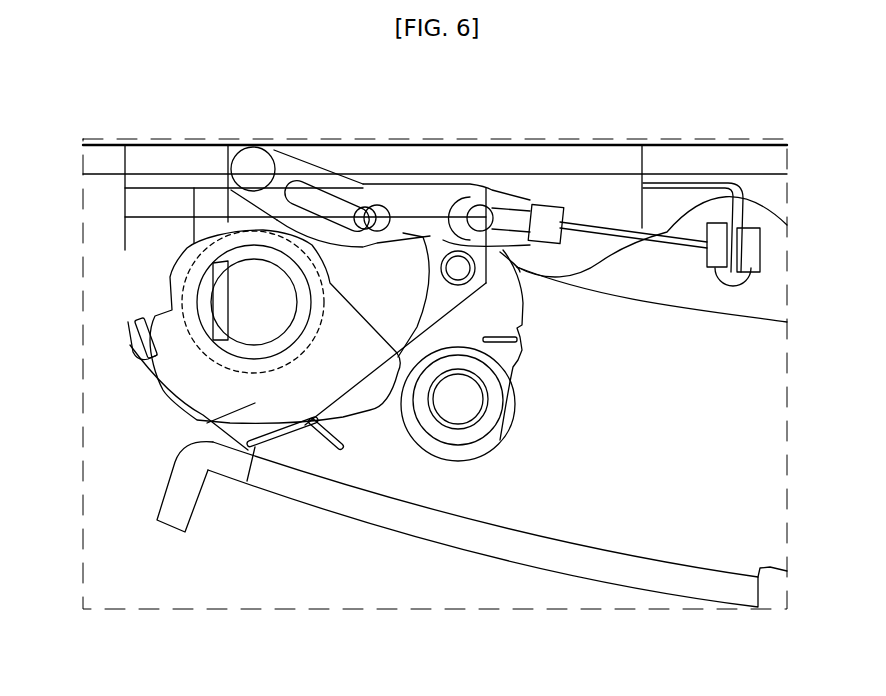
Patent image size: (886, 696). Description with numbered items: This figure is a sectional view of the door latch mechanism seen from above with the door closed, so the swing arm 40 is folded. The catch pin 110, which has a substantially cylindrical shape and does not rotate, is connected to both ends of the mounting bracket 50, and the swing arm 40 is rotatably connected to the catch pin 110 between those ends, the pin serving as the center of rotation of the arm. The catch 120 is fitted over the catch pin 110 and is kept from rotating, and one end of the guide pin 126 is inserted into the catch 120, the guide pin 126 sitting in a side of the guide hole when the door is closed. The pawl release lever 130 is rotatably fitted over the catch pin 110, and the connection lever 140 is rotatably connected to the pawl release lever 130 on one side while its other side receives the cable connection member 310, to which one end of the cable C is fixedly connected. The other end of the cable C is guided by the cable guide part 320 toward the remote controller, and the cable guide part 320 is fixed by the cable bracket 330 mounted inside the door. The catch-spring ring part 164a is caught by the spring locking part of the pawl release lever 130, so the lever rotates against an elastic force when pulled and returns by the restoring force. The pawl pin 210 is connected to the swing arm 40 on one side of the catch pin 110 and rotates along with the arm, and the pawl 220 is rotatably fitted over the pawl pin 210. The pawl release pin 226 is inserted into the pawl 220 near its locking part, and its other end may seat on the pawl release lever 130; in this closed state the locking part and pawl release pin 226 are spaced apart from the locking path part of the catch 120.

The mounting bracket 50 is at (150, 160).
The catch 120 is at (356, 265).
The guide pin 126 is at (375, 212).
The connection lever 140 is at (393, 184).
The pawl release pin 226 is at (456, 262).
The cable connection member 310 is at (544, 232).
The cable C is at (650, 252).
The cable bracket 330 is at (737, 212).
The cable guide part 320 is at (758, 252).
The catch pin 110 is at (253, 288).
The catch-spring ring part 164a is at (128, 320).
The pawl release lever 130 is at (197, 420).
The pawl pin 210 is at (455, 408).
The pawl 220 is at (510, 365).
The swing arm 40 is at (645, 518).